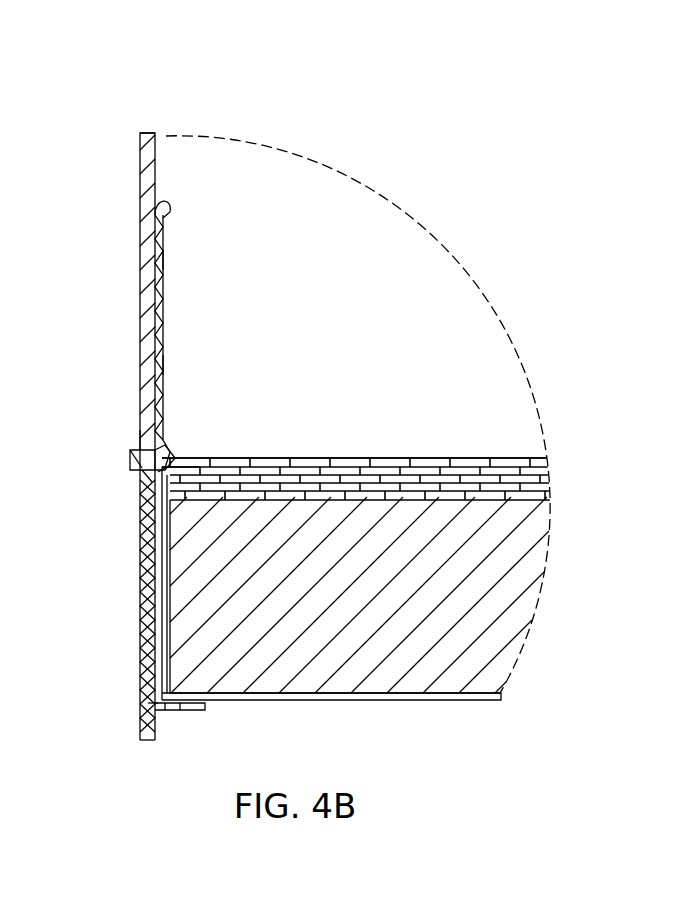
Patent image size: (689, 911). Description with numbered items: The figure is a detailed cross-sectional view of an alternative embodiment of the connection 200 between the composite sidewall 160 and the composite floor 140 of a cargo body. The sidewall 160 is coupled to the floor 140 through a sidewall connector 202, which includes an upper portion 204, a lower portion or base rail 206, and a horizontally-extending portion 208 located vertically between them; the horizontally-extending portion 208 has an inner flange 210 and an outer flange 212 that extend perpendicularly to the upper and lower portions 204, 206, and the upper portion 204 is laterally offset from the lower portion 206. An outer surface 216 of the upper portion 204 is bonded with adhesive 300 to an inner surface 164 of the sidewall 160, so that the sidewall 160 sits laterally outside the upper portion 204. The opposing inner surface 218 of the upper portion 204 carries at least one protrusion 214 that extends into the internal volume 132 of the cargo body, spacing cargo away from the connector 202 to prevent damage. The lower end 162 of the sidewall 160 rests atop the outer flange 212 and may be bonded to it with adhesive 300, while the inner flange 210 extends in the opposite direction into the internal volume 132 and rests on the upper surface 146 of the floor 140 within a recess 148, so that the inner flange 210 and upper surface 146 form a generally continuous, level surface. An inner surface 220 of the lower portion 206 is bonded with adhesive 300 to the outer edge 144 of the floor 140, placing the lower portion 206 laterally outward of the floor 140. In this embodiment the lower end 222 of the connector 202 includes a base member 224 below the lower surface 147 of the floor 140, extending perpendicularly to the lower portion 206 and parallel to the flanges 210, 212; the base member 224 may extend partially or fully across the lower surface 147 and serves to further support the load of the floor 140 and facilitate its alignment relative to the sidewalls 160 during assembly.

The connection 200 is at (263, 90).
The internal volume 132 is at (446, 350).
The composite sidewall 160 is at (140, 172).
The inner surface 164 is at (181, 133).
The upper portion 204 is at (116, 274).
The outer surface 216 is at (153, 219).
The sidewall connector 202 is at (182, 244).
The inner surface 218 is at (170, 258).
The adhesive 300 is at (141, 402).
The protrusion 214 is at (163, 365).
The lower end 162 is at (140, 440).
The outer flange 212 is at (130, 460).
The inner flange 210 is at (186, 450).
The horizontally-extending portion 208 is at (142, 478).
The upper surface 146 is at (420, 456).
The recess 148 is at (203, 452).
The composite floor 140 is at (238, 518).
The outer edge 144 is at (180, 600).
The lower portion 206 is at (121, 628).
The lower surface 147 is at (440, 700).
The inner surface 220 is at (160, 710).
The base member 224 is at (150, 708).
The lower end 222 is at (148, 722).